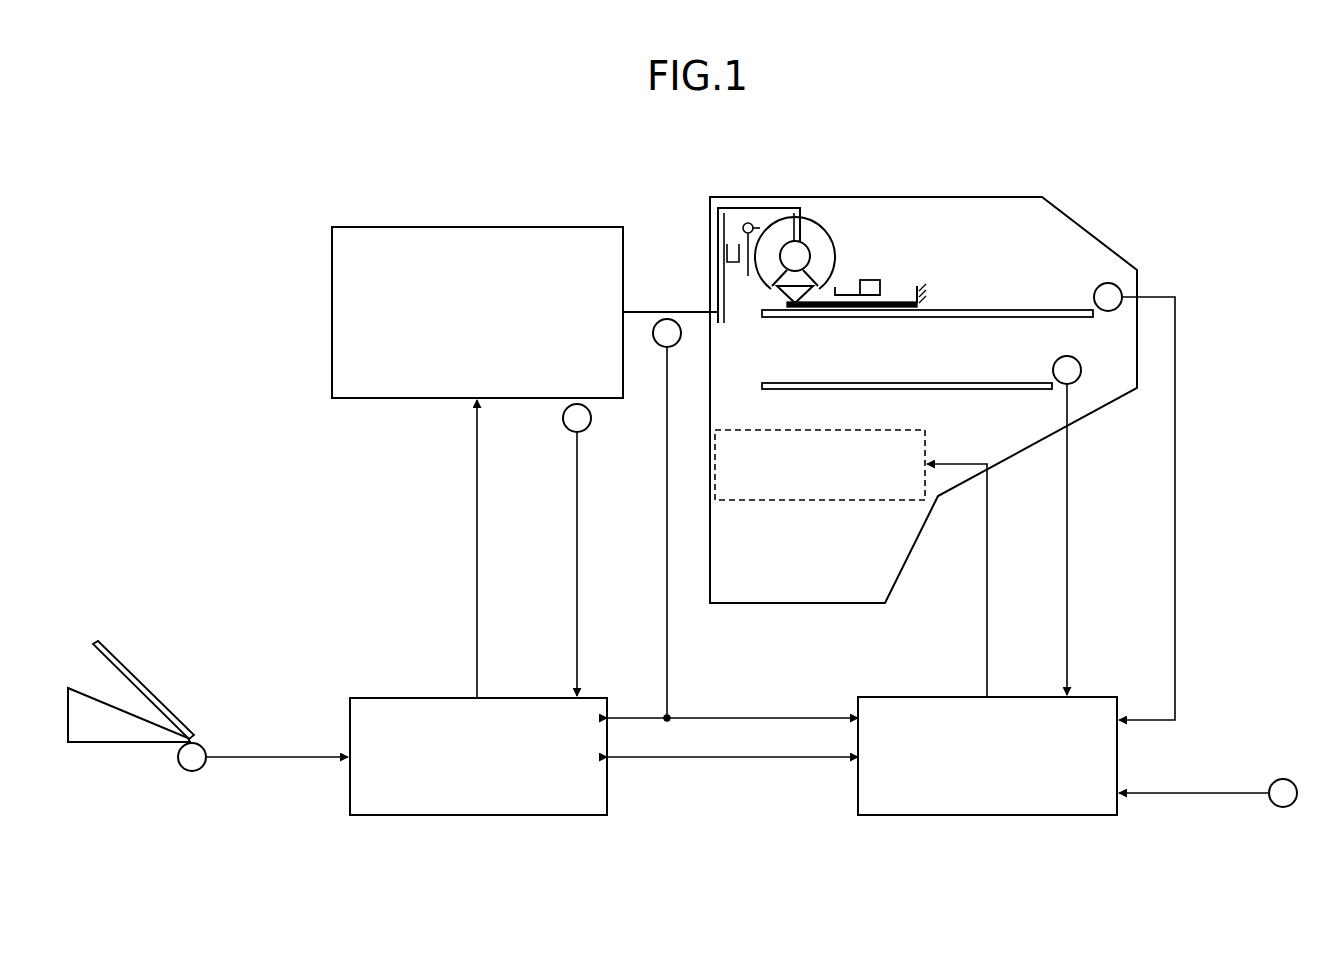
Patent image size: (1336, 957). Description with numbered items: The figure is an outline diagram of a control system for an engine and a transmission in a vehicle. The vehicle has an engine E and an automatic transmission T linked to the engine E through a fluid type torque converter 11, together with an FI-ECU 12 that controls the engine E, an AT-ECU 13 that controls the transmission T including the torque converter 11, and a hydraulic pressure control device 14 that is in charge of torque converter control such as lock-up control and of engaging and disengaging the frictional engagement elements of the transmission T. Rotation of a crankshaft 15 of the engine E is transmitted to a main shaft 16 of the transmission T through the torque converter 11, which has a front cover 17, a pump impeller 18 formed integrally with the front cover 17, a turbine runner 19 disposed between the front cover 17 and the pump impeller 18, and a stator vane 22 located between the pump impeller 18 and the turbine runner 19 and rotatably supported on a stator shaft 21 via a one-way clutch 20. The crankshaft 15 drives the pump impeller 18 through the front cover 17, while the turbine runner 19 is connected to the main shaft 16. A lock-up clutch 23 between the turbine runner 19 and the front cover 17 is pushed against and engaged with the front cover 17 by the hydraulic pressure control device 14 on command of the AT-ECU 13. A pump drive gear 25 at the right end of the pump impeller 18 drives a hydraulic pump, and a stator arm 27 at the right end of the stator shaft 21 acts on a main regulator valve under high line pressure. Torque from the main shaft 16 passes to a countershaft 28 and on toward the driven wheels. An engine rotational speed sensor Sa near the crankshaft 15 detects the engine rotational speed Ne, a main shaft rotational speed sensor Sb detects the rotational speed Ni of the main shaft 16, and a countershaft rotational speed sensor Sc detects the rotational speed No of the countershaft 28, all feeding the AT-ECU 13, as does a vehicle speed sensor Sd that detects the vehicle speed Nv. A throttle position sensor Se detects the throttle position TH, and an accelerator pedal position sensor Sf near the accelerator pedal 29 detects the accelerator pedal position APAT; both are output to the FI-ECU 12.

The torque converter 11 is at (836, 217).
The FI-ECU 12 is at (388, 698).
The AT-ECU 13 is at (920, 697).
The hydraulic pressure control device 14 is at (802, 500).
The crankshaft 15 is at (687, 310).
The main shaft 16 is at (967, 318).
The front cover 17 is at (722, 208).
The pump impeller 18 is at (816, 228).
The turbine runner 19 is at (779, 226).
The one-way clutch 20 is at (817, 309).
The stator shaft 21 is at (893, 300).
The stator vane 22 is at (768, 283).
The lock-up clutch 23 is at (726, 230).
The pump drive gear 25 is at (868, 280).
The stator arm 27 is at (915, 284).
The countershaft 28 is at (920, 392).
The accelerator pedal 29 is at (133, 677).
The engine E is at (435, 227).
The automatic transmission T is at (972, 182).
The engine rotational speed sensor Sa is at (655, 343).
The main shaft rotational speed sensor Sb is at (1097, 287).
The countershaft rotational speed sensor Sc is at (1057, 358).
The vehicle speed sensor Sd is at (1284, 778).
The throttle position sensor Se is at (563, 423).
The accelerator pedal position sensor Sf is at (203, 743).
The throttle position TH is at (596, 564).
The engine rotational speed Ne is at (683, 534).
The main shaft rotational speed Ni is at (1162, 508).
The countershaft rotational speed No is at (1084, 539).
The vehicle speed Nv is at (1194, 780).
The accelerator pedal position APAT is at (277, 745).